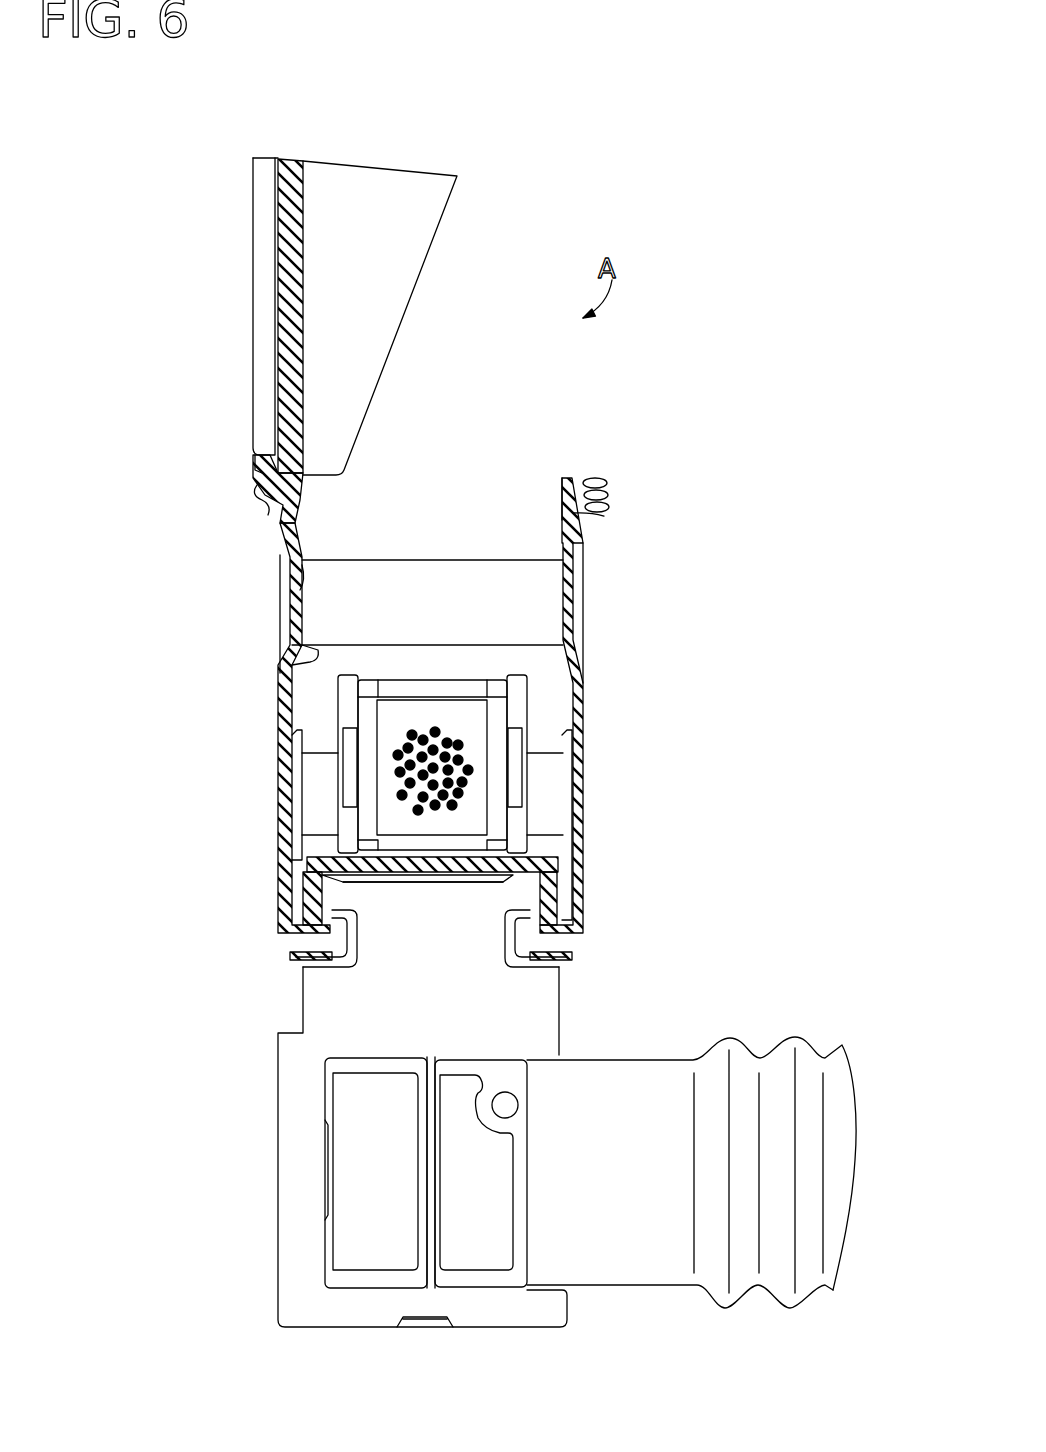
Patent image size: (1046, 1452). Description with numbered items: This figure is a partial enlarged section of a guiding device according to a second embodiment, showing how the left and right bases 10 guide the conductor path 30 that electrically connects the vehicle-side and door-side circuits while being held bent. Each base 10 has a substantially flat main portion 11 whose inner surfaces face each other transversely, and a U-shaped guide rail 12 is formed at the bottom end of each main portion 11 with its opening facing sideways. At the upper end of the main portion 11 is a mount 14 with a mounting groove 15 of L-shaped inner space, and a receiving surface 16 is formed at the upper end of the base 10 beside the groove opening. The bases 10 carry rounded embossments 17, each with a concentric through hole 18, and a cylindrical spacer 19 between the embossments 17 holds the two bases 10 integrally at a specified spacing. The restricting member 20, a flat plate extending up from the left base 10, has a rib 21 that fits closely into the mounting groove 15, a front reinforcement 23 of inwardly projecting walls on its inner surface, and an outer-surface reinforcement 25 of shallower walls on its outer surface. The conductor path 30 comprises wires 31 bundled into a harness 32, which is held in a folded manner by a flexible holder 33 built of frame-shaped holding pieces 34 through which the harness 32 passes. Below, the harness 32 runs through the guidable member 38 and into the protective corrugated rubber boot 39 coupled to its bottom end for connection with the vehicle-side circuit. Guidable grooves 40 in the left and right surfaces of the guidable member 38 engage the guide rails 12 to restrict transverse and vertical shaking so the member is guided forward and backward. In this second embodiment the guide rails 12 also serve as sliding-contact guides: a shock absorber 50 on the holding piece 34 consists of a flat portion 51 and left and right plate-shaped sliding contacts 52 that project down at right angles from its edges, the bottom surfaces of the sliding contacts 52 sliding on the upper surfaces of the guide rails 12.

The base 10 is at (225, 620).
The main portion 11 is at (285, 748).
The guide rail 12 is at (323, 945).
The mount 14 is at (257, 495).
The mounting groove 15 is at (588, 518).
The receiving surface 16 is at (255, 442).
The embossment 17 is at (290, 658).
The through hole 18 is at (297, 588).
The spacer 19 is at (453, 595).
The restricting member 20 is at (295, 205).
The rib 21 is at (287, 508).
The front reinforcement 23 is at (367, 312).
The outer-surface reinforcement 25 is at (265, 243).
The conductor path 30 is at (453, 720).
The wire 31 is at (460, 740).
The harness 32 is at (455, 705).
The flexible holder 33 is at (403, 665).
The holding piece 34 is at (348, 702).
The guidable member 38 is at (540, 1025).
The corrugated rubber boot 39 is at (778, 1075).
The guidable groove 40 is at (332, 995).
The shock absorber 50 is at (560, 850).
The flat portion 51 is at (437, 857).
The sliding contact 52 is at (307, 893).